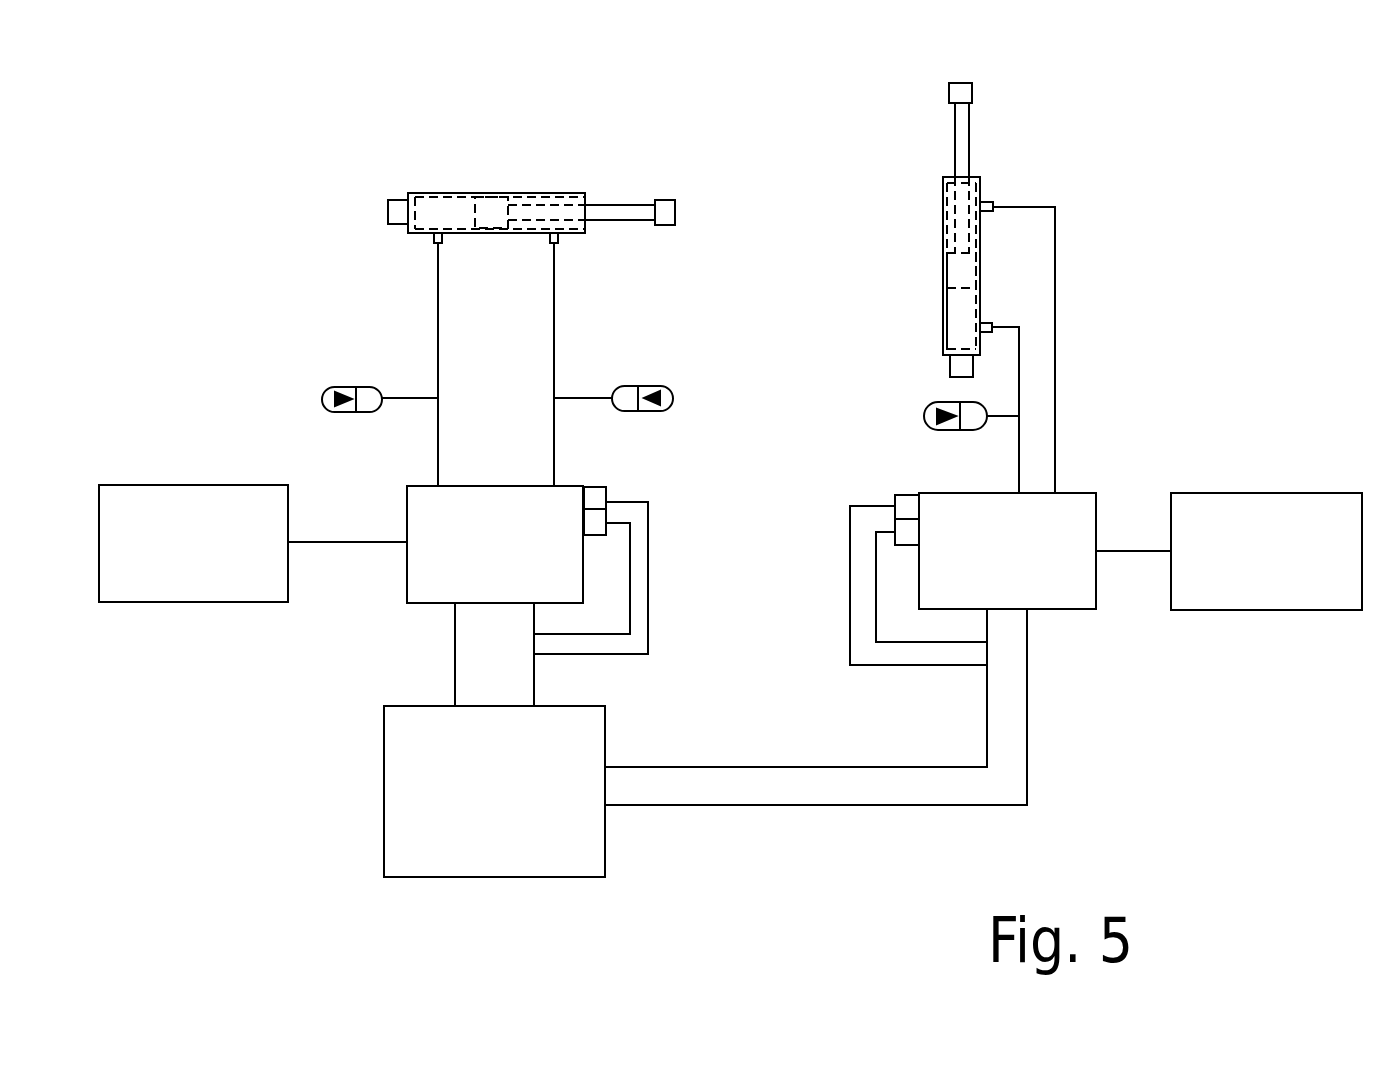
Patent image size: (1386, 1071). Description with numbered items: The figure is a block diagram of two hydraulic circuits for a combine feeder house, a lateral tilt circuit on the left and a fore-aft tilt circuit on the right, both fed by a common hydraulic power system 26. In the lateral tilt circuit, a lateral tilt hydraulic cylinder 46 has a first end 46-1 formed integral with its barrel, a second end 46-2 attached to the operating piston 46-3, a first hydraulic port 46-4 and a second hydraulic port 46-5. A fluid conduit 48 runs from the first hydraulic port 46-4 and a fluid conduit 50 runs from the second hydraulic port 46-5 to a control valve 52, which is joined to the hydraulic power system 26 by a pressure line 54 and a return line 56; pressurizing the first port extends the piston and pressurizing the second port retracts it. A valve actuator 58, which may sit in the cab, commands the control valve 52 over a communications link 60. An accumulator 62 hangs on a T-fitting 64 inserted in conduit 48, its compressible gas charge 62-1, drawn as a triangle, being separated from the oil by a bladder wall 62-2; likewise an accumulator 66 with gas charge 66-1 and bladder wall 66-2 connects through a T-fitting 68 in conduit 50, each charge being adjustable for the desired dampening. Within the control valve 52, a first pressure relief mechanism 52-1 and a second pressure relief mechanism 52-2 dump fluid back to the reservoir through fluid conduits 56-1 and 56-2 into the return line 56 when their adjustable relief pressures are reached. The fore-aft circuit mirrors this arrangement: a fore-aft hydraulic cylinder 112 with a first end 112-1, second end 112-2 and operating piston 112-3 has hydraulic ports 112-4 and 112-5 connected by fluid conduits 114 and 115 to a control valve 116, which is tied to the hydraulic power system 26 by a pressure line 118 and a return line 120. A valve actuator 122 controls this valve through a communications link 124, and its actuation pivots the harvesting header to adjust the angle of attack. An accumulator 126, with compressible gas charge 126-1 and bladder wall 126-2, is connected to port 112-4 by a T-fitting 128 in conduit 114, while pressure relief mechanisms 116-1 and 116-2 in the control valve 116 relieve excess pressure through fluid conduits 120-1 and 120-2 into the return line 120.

The hydraulic power system 26 is at (494, 791).
The lateral tilt hydraulic cylinder 46 is at (548, 193).
The first end 46-1 is at (415, 193).
The second end 46-2 is at (662, 200).
The operating piston 46-3 is at (500, 193).
The first hydraulic port 46-4 is at (435, 242).
The second hydraulic port 46-5 is at (560, 245).
The fluid conduit 48 is at (438, 433).
The fluid conduit 50 is at (554, 432).
The control valve 52 is at (495, 544).
The first pressure relief mechanism 52-1 is at (594, 487).
The second pressure relief mechanism 52-2 is at (594, 535).
The pressure line 54 is at (455, 660).
The return line 56 is at (534, 682).
The fluid conduit 56-1 is at (648, 538).
The fluid conduit 56-2 is at (630, 618).
The valve actuator 58 is at (193, 543).
The communications link 60 is at (370, 542).
The accumulator 62 is at (322, 398).
The compressible gas charge 62-1 is at (341, 388).
The bladder wall 62-2 is at (356, 412).
The T-fitting 64 is at (438, 398).
The accumulator 66 is at (673, 398).
The compressible gas charge 66-1 is at (655, 392).
The bladder wall 66-2 is at (638, 411).
The T-fitting 68 is at (554, 398).
The fore-aft hydraulic cylinder 112 is at (943, 250).
The first end 112-1 is at (943, 343).
The second end 112-2 is at (955, 90).
The operating piston 112-3 is at (970, 270).
The hydraulic port 112-4 is at (992, 327).
The hydraulic port 112-5 is at (990, 203).
The fluid conduit 114 is at (1019, 462).
The fluid conduit 115 is at (1055, 375).
The control valve 116 is at (1007, 551).
The pressure relief mechanism 116-1 is at (908, 495).
The pressure relief mechanism 116-2 is at (908, 545).
The pressure line 118 is at (1027, 700).
The return line 120 is at (987, 705).
The fluid conduit 120-1 is at (848, 552).
The fluid conduit 120-2 is at (876, 622).
The valve actuator 122 is at (1266, 551).
The communications link 124 is at (1113, 551).
The accumulator 126 is at (924, 416).
The compressible gas charge 126-1 is at (932, 405).
The bladder wall 126-2 is at (965, 403).
The T-fitting 128 is at (1019, 420).